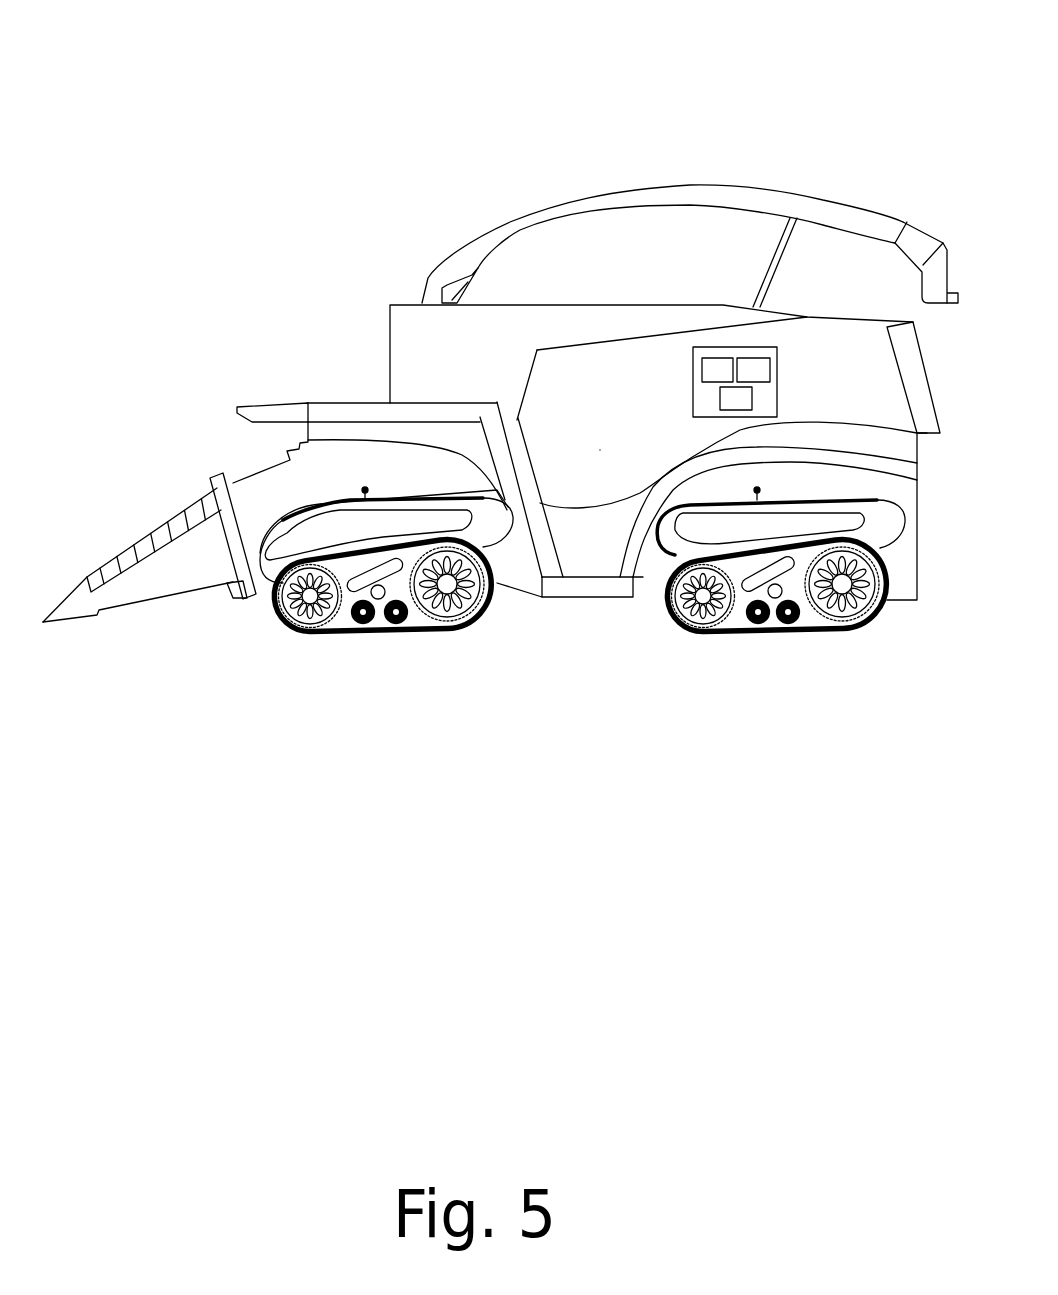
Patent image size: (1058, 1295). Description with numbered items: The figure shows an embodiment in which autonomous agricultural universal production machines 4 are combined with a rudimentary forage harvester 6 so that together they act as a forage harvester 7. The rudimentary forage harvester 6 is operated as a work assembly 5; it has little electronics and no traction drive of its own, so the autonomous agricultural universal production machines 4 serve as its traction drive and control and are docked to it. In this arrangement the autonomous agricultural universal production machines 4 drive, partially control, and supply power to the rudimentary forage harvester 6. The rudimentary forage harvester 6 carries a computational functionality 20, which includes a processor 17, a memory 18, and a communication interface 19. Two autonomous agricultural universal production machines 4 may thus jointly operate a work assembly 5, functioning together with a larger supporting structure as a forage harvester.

The autonomous agricultural universal production machine 4 is at (727, 633).
The work assembly 5 is at (668, 195).
The rudimentary forage harvester 6 is at (610, 438).
The forage harvester 7 is at (298, 274).
The processor 17 is at (717, 370).
The memory 18 is at (753, 370).
The communication interface 19 is at (736, 398).
The computational functionality 20 is at (777, 383).